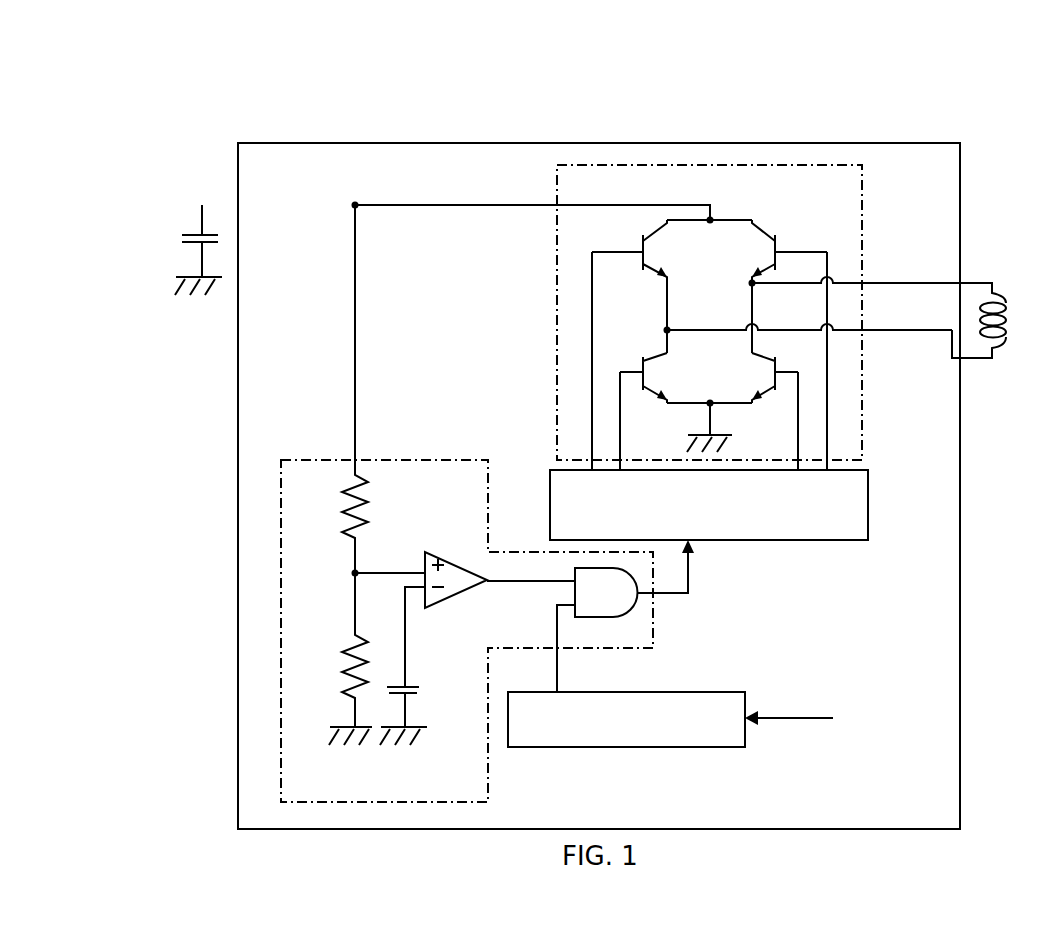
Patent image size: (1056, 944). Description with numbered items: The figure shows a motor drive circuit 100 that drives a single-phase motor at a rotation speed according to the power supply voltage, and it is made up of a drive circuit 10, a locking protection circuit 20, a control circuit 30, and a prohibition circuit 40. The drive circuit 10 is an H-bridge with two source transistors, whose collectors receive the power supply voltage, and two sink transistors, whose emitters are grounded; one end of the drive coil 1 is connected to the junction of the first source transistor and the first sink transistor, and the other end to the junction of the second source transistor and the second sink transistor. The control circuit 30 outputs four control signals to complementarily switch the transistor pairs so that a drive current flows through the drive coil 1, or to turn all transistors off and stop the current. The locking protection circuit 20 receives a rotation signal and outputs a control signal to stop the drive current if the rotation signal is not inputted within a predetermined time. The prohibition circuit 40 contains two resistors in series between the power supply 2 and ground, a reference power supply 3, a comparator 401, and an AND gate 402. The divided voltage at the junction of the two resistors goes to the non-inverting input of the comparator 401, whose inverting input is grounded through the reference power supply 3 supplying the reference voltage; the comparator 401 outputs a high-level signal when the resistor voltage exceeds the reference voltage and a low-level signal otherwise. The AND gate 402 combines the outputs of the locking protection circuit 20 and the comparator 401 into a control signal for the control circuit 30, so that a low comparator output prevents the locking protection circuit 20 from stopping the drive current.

The motor drive circuit 100 is at (585, 142).
The drive circuit 10 is at (807, 165).
The drive coil 1 is at (1003, 280).
The power supply 2 is at (193, 234).
The prohibition circuit 40 is at (393, 460).
The comparator 401 is at (443, 560).
The AND gate 402 is at (625, 613).
The reference power supply 3 is at (413, 687).
The control circuit 30 is at (870, 510).
The locking protection circuit 20 is at (657, 690).